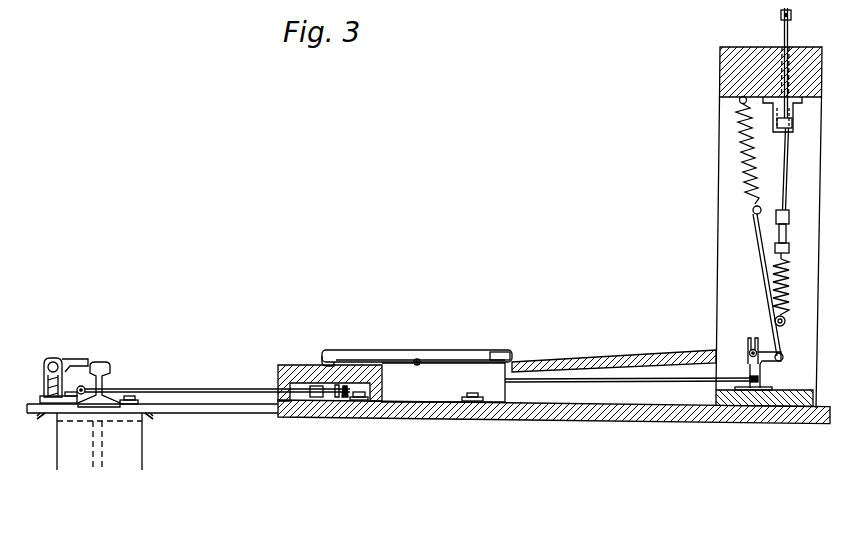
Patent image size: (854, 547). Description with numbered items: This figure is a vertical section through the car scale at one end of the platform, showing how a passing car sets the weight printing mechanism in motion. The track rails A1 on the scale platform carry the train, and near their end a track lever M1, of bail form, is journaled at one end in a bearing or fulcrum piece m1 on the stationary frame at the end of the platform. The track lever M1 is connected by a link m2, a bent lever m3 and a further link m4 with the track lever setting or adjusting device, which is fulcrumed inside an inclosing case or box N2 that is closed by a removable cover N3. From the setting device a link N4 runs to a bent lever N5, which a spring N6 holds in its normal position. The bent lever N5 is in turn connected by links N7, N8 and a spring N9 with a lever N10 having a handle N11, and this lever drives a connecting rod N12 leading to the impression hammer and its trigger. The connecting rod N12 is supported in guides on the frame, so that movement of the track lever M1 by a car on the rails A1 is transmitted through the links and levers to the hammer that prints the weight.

The bearing or fulcrum piece m1 is at (52, 357).
The track lever M1 is at (75, 356).
The track rails A1 is at (109, 362).
The link m2 is at (163, 388).
The bent lever m3 is at (337, 398).
The link m4 is at (349, 398).
The inclosing case or box N2 is at (443, 382).
The removable cover N3 is at (452, 350).
The link N4 is at (660, 380).
The bent lever N5 is at (767, 357).
The spring N6 is at (740, 132).
The link N7 is at (762, 268).
The link N8 is at (784, 172).
The spring N9 is at (788, 290).
The lever N10 is at (791, 122).
The handle N11 is at (785, 43).
The connecting rod N12 is at (791, 15).